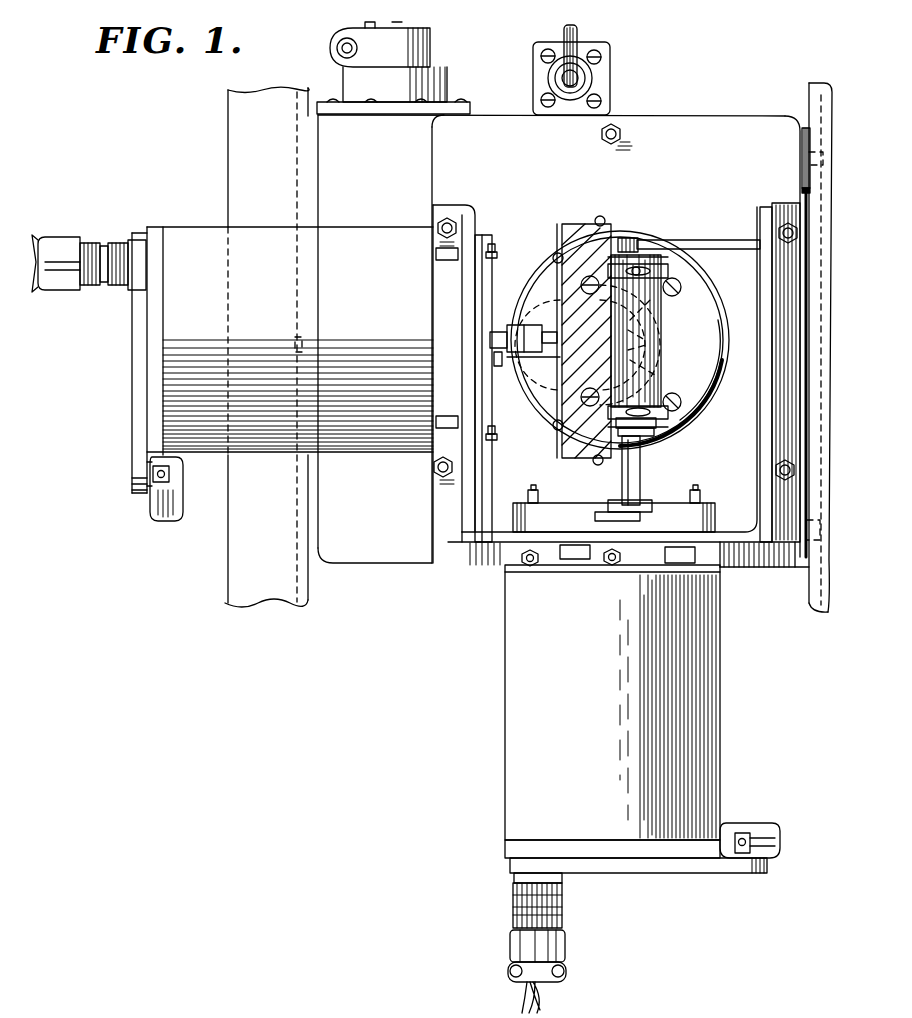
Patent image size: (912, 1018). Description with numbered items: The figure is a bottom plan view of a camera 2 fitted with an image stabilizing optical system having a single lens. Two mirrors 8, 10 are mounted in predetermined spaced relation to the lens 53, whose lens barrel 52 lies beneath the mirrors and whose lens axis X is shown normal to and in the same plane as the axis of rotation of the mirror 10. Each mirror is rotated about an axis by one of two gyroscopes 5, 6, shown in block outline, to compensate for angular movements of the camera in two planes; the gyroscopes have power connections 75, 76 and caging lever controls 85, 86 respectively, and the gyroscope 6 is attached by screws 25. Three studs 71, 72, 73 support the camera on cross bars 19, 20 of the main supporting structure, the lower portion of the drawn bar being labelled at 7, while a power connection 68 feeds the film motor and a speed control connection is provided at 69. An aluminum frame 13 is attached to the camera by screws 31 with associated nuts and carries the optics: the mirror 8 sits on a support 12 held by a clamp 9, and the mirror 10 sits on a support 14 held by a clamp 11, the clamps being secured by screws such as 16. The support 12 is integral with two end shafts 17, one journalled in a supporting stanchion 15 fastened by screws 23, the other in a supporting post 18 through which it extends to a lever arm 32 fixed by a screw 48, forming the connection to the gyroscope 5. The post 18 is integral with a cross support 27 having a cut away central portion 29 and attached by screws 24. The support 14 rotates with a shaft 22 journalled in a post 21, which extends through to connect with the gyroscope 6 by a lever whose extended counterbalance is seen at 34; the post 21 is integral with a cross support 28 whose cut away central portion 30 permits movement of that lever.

The camera 2 is at (697, 109).
The gyroscope 5 is at (497, 734).
The gyroscope 6 is at (278, 219).
The support post 7 is at (223, 611).
The mirror 8 is at (660, 324).
The clamp 9 is at (668, 271).
The mirror 10 is at (573, 223).
The clamp 11 is at (601, 216).
The support 12 is at (640, 268).
The frame 13 is at (458, 555).
The support 14 is at (560, 228).
The supporting stanchion 15 is at (727, 240).
The screw 16 is at (660, 256).
The end shaft 17 is at (634, 236).
The supporting post 18 is at (641, 470).
The cross bar 19 is at (228, 90).
The cross bar 20 is at (822, 605).
The support 21 is at (499, 366).
The shaft 22 is at (550, 345).
The screw 23 is at (775, 262).
The screw 24 is at (526, 496).
The screw 25 is at (496, 248).
The cross support 27 is at (572, 515).
The cross support 28 is at (488, 234).
The cut away central portion 29 is at (652, 510).
The cut away central portion 30 is at (482, 306).
The screw 31 is at (447, 218).
The lever arm 32 is at (610, 512).
The counterbalance 34 is at (490, 340).
The screw 48 is at (622, 562).
The lens barrel 52 is at (650, 363).
The lens 53 is at (650, 366).
The power connection 68 is at (612, 61).
The speed control connection 69 is at (440, 72).
The stud 71 is at (294, 340).
The stud 72 is at (818, 104).
The stud 73 is at (808, 570).
The power connection 75 is at (517, 948).
The power connection 76 is at (62, 236).
The caging lever control 85 is at (765, 852).
The caging lever control 86 is at (167, 512).
The lens axis X is at (665, 336).